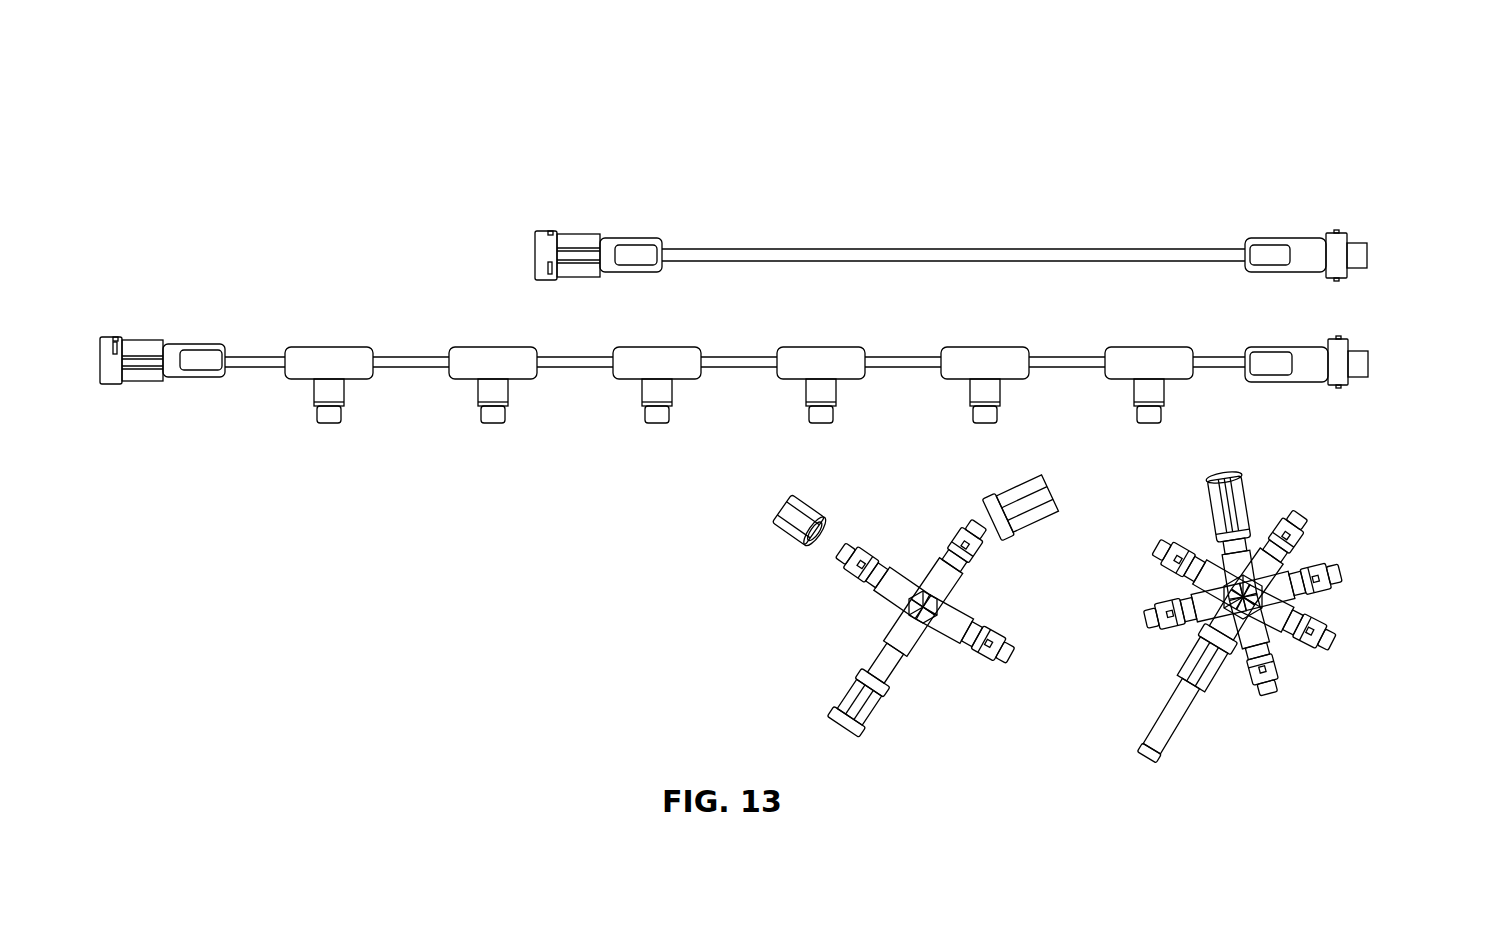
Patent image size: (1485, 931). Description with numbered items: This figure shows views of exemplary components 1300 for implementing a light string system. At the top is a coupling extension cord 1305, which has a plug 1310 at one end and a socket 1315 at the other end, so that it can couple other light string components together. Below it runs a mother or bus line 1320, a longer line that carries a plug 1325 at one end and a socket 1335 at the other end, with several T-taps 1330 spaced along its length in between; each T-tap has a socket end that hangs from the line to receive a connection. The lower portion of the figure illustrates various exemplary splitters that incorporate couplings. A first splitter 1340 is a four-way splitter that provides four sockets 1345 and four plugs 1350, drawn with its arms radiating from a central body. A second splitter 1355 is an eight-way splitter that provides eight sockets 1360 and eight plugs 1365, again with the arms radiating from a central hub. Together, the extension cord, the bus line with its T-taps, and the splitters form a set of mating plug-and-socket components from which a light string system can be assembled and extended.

The components 1300 is at (378, 100).
The coupling extension cord 1305 is at (892, 238).
The plug 1310 is at (537, 258).
The socket 1315 is at (1362, 253).
The mother or bus line 1320 is at (276, 452).
The plug 1325 is at (138, 385).
The T-taps 1330 is at (358, 384).
The socket 1335 is at (1300, 383).
The first splitter 1340 is at (816, 644).
The sockets 1345 is at (853, 575).
The plugs 1350 is at (768, 520).
The second splitter 1355 is at (1140, 680).
The sockets 1360 is at (1300, 535).
The plugs 1365 is at (1215, 495).